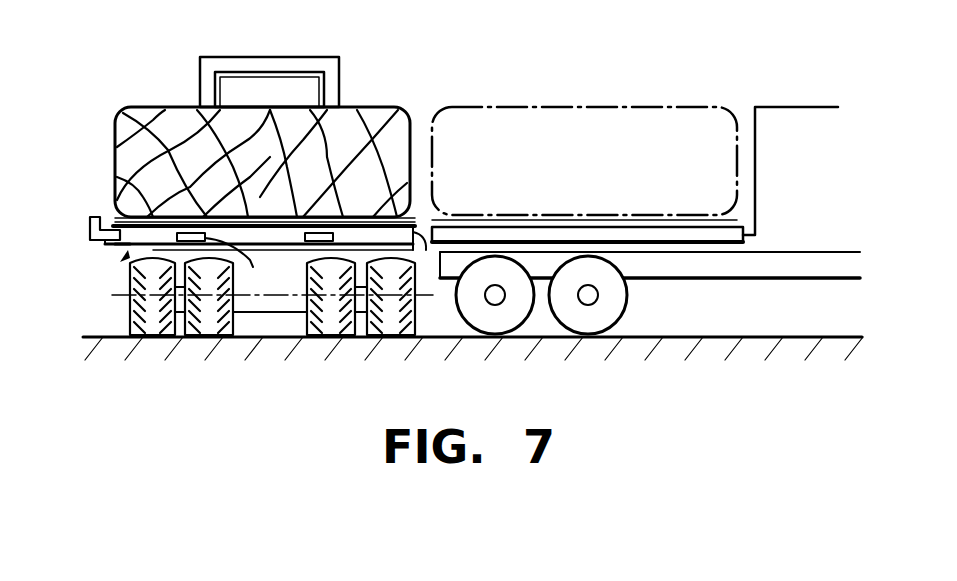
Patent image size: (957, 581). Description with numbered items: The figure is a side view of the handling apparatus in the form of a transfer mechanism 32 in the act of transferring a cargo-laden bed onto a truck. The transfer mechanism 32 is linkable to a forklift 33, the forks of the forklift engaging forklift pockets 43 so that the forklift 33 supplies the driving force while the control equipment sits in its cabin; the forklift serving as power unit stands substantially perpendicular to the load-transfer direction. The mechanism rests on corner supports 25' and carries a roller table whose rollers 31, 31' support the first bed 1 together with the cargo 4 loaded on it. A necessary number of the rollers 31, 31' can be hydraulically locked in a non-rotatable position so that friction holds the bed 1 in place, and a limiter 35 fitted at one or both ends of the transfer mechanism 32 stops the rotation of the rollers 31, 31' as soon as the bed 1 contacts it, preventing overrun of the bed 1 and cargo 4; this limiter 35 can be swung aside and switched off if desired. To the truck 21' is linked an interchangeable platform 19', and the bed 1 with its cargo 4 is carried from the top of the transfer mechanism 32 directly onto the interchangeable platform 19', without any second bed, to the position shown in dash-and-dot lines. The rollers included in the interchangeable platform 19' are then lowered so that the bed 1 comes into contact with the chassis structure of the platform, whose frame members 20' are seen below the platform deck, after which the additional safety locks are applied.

The first bed 1 is at (118, 215).
The cargo 4 is at (347, 123).
The forklift 33 is at (268, 63).
The limiter 35 is at (88, 233).
The corner supports 25' is at (263, 277).
The transfer mechanism 32 is at (123, 257).
The forklift pockets 43 is at (293, 239).
The rollers 31 is at (570, 162).
The rollers 31' is at (584, 200).
The interchangeable platform 19' is at (587, 275).
The trailer frame 20' is at (650, 287).
The truck 21' is at (790, 142).